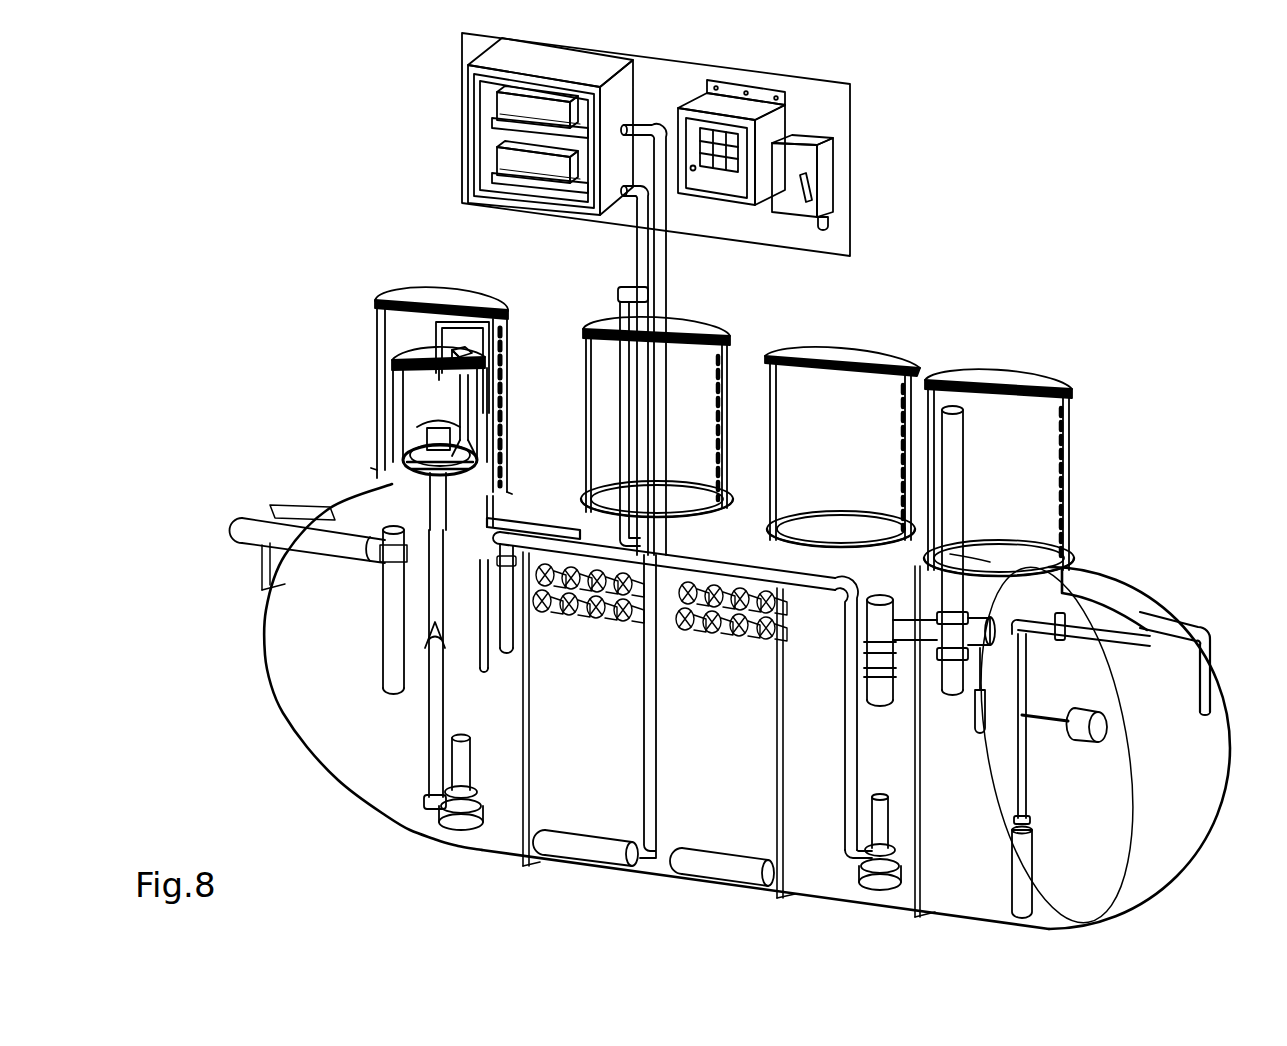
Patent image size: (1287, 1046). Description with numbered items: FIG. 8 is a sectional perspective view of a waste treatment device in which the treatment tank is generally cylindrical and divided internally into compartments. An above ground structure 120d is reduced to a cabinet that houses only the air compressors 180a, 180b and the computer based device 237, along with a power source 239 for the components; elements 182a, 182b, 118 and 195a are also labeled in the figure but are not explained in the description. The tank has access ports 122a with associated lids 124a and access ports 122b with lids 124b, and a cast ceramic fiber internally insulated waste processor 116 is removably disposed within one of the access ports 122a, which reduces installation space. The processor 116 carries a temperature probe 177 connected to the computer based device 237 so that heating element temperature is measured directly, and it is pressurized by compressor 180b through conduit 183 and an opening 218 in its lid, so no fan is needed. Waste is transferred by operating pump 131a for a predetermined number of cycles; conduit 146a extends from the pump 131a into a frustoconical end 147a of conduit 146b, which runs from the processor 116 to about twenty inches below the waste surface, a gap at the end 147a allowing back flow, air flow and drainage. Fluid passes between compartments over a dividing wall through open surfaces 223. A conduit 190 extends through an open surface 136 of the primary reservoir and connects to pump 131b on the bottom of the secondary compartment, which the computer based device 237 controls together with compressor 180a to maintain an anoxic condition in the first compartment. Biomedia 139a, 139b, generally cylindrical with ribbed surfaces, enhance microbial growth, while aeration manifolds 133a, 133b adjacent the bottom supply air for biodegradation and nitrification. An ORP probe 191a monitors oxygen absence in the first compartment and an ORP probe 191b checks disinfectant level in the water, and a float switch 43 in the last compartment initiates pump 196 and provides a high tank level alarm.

The above ground structure 120d is at (850, 226).
The air compressor 180a is at (500, 96).
The air compressor 180b is at (500, 152).
The computer based device 237 is at (795, 120).
The control unit 182a is at (660, 188).
The power source 239 is at (830, 178).
The air supply line 182b is at (633, 240).
The pump 131a is at (532, 767).
The pump 131b is at (910, 860).
The access port 122a is at (370, 337).
The lid 124a is at (508, 311).
The access port 122b is at (770, 380).
The lid 124b is at (980, 362).
The waste processor 116 is at (393, 388).
The conduit 183 is at (462, 322).
The opening 218 is at (418, 343).
The temperature probe 177 is at (471, 413).
The conduit 146b is at (410, 500).
The open surface 136 is at (260, 545).
The ORP probe 191a is at (393, 633).
The conduit 146a is at (427, 713).
The frustoconical end 147a is at (443, 641).
The drop pipe 195a is at (437, 612).
The open surface 223 is at (540, 505).
The conduit 190 is at (823, 563).
The biomedia 139a is at (602, 622).
The biomedia 139b is at (733, 633).
The aeration manifold 133a is at (565, 828).
The manifold 133b is at (710, 848).
The discharge pipe 118 is at (967, 485).
The ORP probe 191b is at (985, 722).
The float switch 43 is at (1080, 743).
The pump 196 is at (1023, 853).